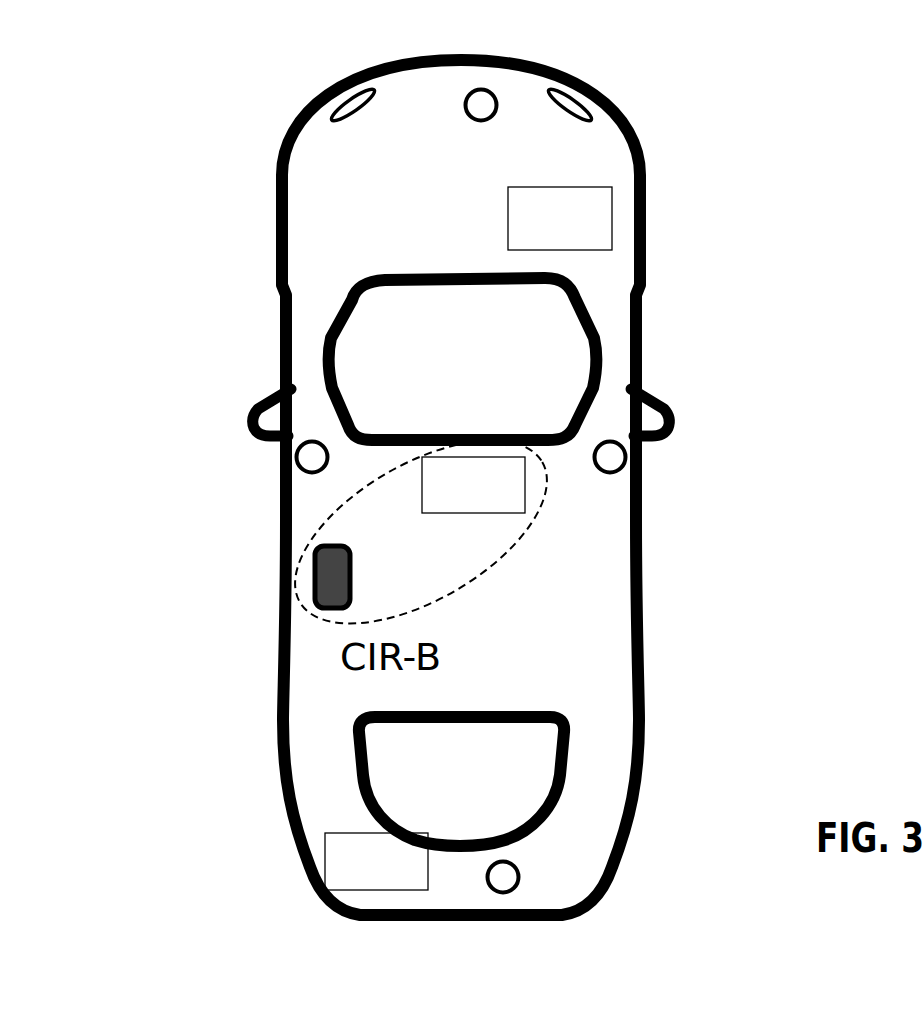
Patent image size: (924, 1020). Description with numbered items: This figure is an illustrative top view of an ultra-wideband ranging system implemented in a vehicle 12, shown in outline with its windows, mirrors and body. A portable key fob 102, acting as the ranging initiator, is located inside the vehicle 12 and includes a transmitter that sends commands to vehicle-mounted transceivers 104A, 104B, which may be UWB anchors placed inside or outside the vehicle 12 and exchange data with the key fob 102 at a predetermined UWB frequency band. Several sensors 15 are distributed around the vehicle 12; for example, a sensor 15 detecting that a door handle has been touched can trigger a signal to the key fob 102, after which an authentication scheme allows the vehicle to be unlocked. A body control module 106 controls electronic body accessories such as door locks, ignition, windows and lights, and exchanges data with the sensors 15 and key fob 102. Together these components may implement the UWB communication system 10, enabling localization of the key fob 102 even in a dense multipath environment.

The vehicle 12 is at (644, 604).
The sensors 15 is at (494, 93).
The body control module 106 is at (524, 246).
The UWB communication system 10 is at (518, 550).
The key fob 102 is at (313, 560).
The vehicle-mounted transceiver 104A is at (357, 545).
The vehicle-mounted transceiver 104B is at (323, 610).